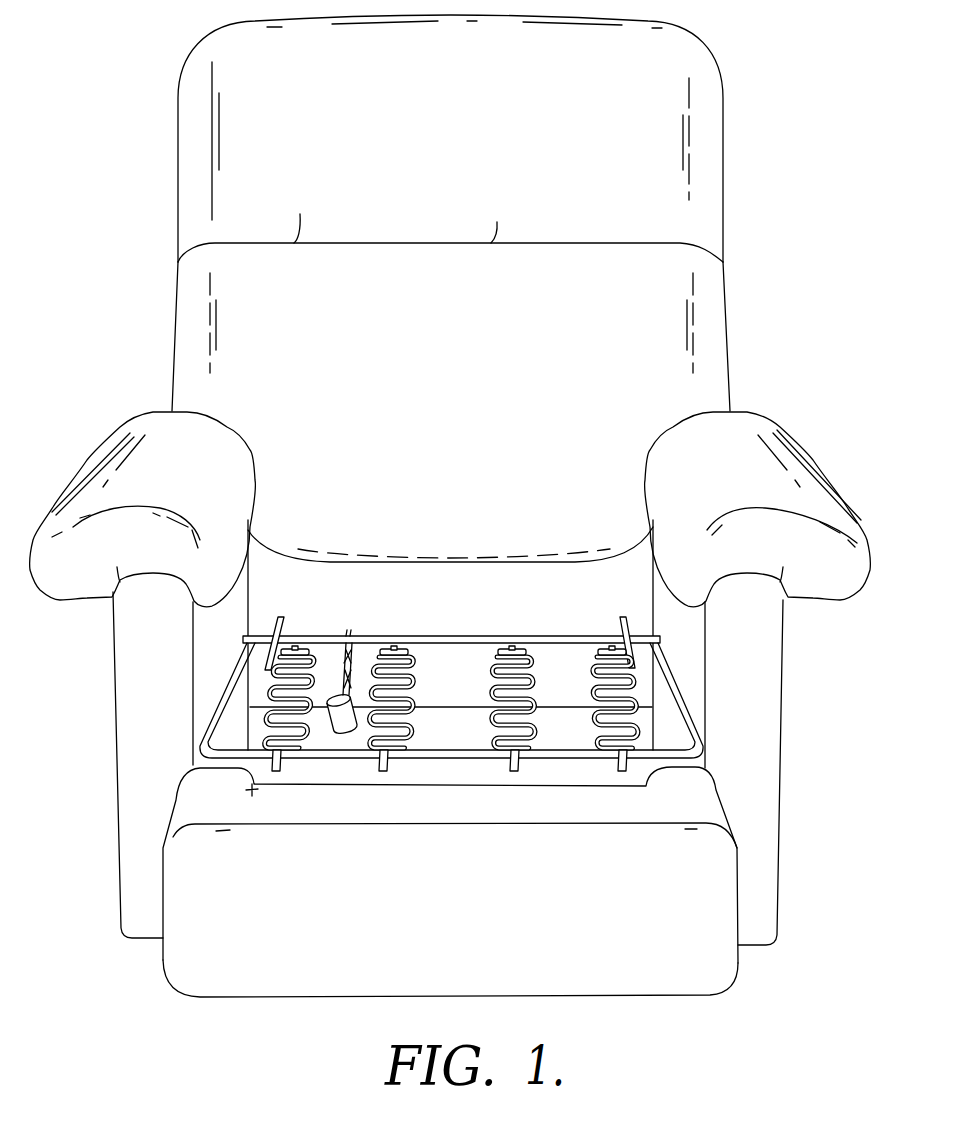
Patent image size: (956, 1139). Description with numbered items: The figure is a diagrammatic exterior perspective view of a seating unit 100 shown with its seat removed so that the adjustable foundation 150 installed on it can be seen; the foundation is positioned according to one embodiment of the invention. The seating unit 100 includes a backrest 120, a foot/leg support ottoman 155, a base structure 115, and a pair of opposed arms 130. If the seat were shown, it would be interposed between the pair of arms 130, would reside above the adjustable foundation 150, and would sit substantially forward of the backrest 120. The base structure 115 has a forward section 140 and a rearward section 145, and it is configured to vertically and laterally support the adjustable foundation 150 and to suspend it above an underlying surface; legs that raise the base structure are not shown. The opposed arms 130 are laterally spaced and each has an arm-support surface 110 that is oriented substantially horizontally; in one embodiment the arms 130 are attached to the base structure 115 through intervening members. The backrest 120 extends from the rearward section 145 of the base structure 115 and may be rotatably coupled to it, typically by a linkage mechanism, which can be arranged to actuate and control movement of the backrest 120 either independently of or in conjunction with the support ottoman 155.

The seating unit 100 is at (130, 72).
The arm-support surface 110 is at (100, 452).
The base structure 115 is at (97, 720).
The backrest 120 is at (724, 315).
The opposed arms 130 is at (432, 768).
The forward section 140 is at (277, 963).
The rearward section 145 is at (375, 576).
The adjustable foundation 150 is at (678, 668).
The foot/leg support ottoman 155 is at (717, 993).